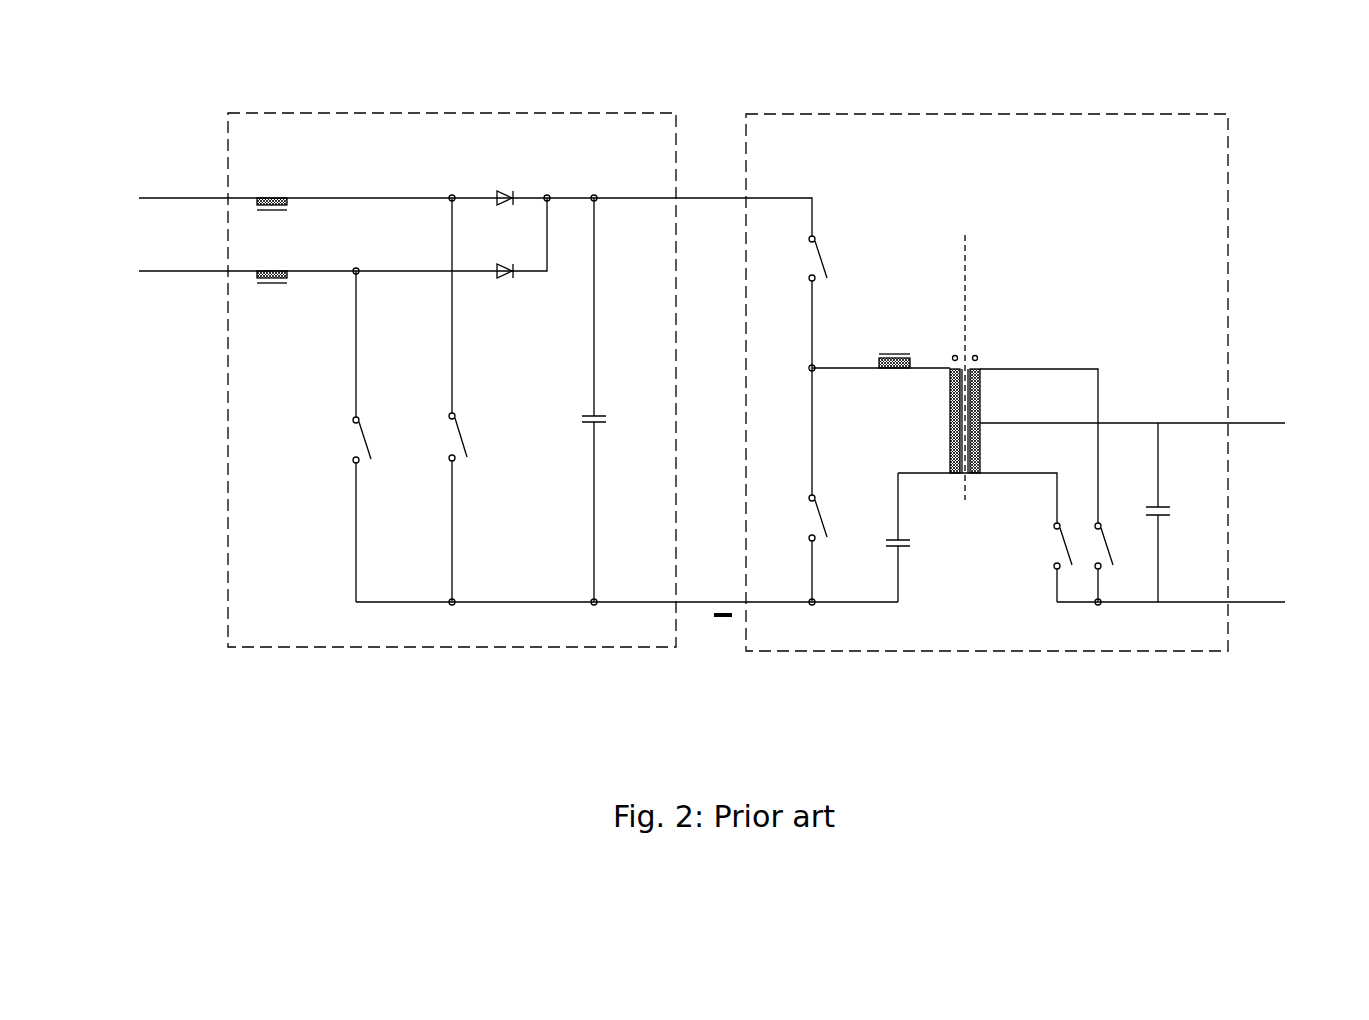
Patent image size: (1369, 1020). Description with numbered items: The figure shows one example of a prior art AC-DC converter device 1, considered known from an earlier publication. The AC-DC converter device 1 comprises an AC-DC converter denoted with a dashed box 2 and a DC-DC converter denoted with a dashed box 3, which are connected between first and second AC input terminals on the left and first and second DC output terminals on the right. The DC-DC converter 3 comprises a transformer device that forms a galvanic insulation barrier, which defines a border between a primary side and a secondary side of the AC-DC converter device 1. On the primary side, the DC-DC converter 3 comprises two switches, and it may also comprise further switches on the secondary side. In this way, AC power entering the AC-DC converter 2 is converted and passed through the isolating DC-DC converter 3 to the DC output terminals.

The AC-DC converter device 1 is at (188, 54).
The AC-DC converter 2 is at (248, 635).
The DC-DC converter 3 is at (970, 642).